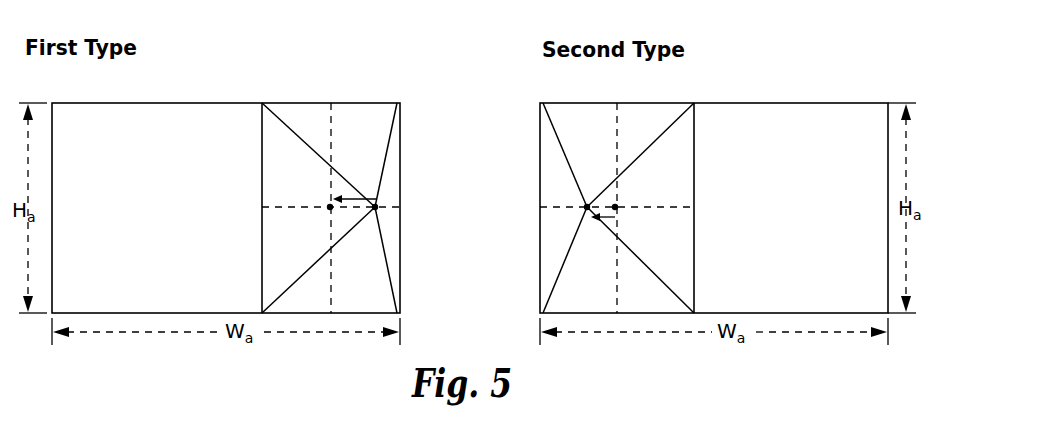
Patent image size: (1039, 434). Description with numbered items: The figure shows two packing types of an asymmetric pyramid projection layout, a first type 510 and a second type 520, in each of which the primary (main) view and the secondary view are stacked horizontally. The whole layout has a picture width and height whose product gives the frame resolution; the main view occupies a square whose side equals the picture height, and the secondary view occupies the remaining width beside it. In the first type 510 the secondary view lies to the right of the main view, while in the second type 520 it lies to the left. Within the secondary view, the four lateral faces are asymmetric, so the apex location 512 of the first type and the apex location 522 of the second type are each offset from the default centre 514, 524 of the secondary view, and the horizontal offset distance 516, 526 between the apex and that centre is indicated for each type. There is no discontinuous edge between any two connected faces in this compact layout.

The first type 510 is at (191, 96).
The apex location 512 is at (377, 209).
The default centre 514 is at (338, 237).
The horizontal offset distance 516 is at (352, 192).
The second type 520 is at (775, 96).
The apex location 522 is at (588, 204).
The default centre 524 is at (616, 202).
The horizontal offset distance 526 is at (606, 220).